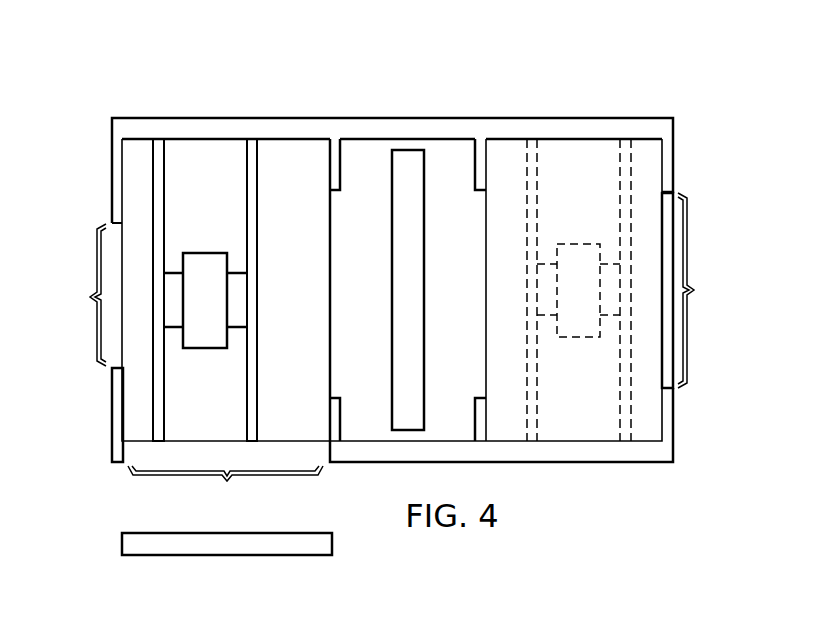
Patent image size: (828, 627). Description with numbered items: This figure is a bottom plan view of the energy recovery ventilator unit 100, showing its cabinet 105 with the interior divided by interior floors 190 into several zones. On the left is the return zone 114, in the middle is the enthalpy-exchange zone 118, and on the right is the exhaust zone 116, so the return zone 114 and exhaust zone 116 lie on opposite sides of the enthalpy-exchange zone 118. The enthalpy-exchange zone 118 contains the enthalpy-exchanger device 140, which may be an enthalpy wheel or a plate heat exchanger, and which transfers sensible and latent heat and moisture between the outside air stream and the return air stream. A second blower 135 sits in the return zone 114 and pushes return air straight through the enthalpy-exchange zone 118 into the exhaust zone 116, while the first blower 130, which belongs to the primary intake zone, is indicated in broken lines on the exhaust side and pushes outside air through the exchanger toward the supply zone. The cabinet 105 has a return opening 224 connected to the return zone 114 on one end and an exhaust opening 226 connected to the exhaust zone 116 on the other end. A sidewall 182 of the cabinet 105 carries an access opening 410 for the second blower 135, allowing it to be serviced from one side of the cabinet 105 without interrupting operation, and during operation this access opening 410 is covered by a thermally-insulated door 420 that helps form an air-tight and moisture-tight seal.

The energy recovery ventilator unit 100 is at (588, 54).
The cabinet 105 is at (676, 96).
The interior floors 190 is at (285, 155).
The enthalpy-exchanger device 140 is at (425, 168).
The return zone 114 is at (184, 215).
The enthalpy-exchange zone 118 is at (382, 248).
The exhaust zone 116 is at (559, 215).
The second blower 135 is at (203, 340).
The first blower 130 is at (580, 336).
The return opening 224 is at (74, 295).
The exhaust opening 226 is at (710, 290).
The sidewall 182 is at (108, 475).
The access opening 410 is at (225, 489).
The thermally-insulated door 420 is at (152, 547).